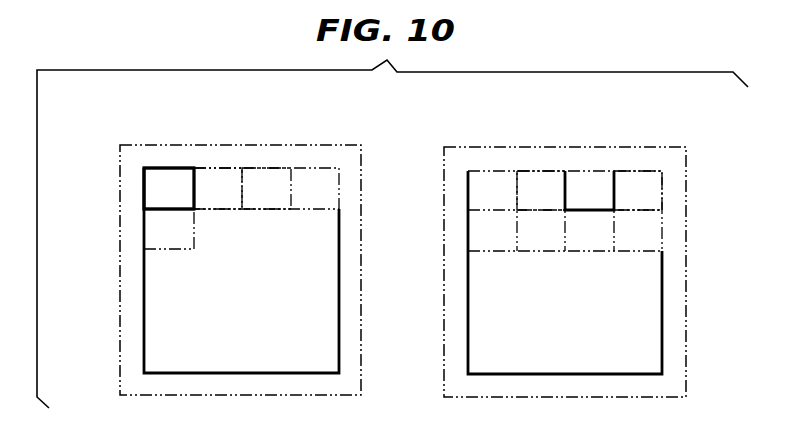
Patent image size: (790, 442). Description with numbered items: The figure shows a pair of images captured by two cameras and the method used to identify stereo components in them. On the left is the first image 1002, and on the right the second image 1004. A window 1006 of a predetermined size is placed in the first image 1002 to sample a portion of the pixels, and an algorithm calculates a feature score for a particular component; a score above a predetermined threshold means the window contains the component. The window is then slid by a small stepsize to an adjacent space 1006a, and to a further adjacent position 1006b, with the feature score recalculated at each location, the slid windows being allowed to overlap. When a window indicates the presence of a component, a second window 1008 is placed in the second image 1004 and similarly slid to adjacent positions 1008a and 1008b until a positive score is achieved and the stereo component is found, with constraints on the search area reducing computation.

The first image 1002 is at (310, 145).
The second image 1004 is at (493, 147).
The window 1006 is at (143, 200).
The adjacent space 1006a is at (208, 168).
The adjacent pixel region 1006b is at (275, 168).
The second window 1008 is at (587, 171).
The adjacent pixel region 1008a is at (650, 171).
The adjacent pixel region 1008b is at (527, 171).